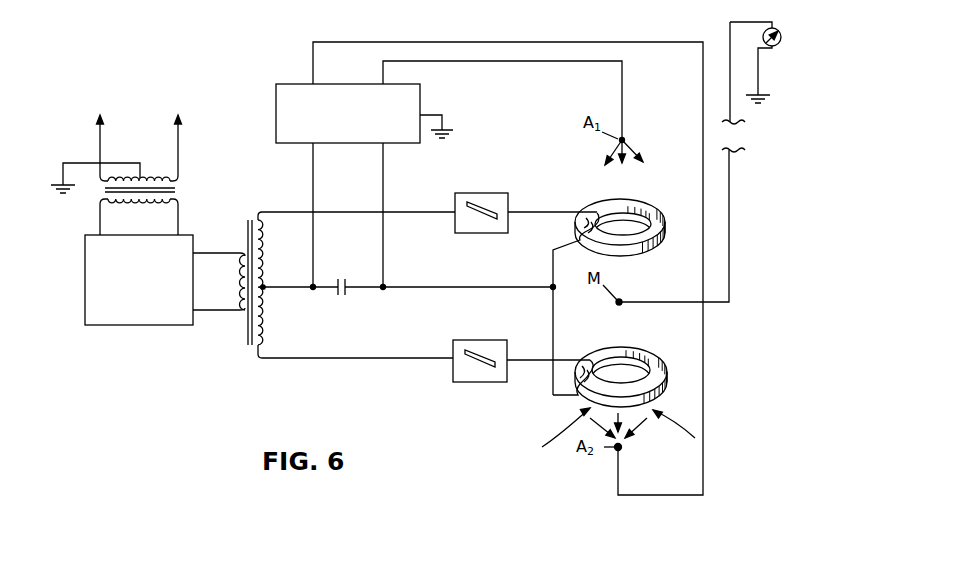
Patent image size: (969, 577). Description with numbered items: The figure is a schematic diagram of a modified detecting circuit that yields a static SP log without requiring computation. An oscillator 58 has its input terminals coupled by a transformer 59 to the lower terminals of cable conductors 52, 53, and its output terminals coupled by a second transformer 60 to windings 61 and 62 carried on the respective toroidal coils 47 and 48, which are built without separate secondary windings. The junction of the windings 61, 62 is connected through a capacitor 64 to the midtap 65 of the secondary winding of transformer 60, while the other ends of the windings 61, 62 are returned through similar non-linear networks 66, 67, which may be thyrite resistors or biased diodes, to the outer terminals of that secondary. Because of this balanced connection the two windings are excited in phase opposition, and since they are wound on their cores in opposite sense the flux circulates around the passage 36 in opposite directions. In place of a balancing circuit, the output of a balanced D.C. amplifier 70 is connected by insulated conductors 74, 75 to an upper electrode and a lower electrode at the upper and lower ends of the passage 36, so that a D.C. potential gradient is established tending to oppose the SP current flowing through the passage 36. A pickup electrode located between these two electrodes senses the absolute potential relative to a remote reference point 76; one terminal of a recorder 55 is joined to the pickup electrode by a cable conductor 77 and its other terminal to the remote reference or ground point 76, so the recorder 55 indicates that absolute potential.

The passage 36 is at (625, 232).
The toroidal coil 47 is at (622, 225).
The toroidal coil 48 is at (627, 347).
The cable conductor 52 is at (100, 136).
The cable conductor 53 is at (180, 155).
The recorder 55 is at (780, 45).
The oscillator 58 is at (85, 265).
The transformer 59 is at (177, 193).
The transformer 60 is at (247, 322).
The winding 61 is at (575, 233).
The winding 62 is at (572, 383).
The capacitor 64 is at (346, 282).
The midtap 65 is at (264, 285).
The non-linear network 66 is at (473, 235).
The non-linear network 67 is at (477, 335).
The balanced D.C. amplifier 70 is at (276, 117).
The insulated conductor 74 is at (607, 63).
The insulated conductor 75 is at (562, 42).
The remote reference point 76 is at (767, 105).
The cable conductor 77 is at (728, 37).